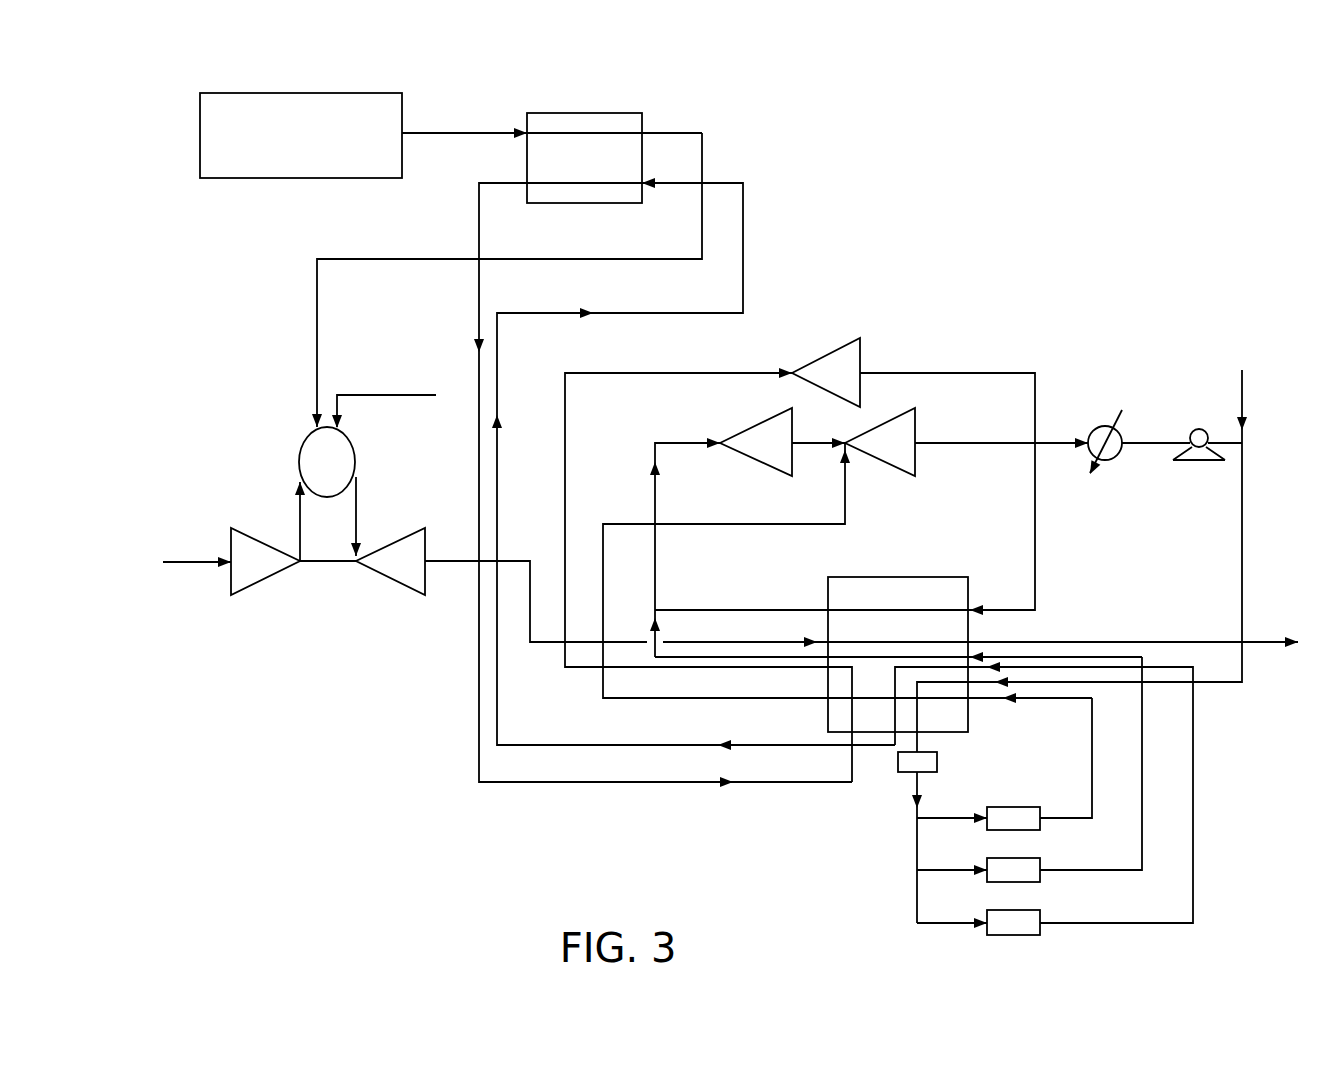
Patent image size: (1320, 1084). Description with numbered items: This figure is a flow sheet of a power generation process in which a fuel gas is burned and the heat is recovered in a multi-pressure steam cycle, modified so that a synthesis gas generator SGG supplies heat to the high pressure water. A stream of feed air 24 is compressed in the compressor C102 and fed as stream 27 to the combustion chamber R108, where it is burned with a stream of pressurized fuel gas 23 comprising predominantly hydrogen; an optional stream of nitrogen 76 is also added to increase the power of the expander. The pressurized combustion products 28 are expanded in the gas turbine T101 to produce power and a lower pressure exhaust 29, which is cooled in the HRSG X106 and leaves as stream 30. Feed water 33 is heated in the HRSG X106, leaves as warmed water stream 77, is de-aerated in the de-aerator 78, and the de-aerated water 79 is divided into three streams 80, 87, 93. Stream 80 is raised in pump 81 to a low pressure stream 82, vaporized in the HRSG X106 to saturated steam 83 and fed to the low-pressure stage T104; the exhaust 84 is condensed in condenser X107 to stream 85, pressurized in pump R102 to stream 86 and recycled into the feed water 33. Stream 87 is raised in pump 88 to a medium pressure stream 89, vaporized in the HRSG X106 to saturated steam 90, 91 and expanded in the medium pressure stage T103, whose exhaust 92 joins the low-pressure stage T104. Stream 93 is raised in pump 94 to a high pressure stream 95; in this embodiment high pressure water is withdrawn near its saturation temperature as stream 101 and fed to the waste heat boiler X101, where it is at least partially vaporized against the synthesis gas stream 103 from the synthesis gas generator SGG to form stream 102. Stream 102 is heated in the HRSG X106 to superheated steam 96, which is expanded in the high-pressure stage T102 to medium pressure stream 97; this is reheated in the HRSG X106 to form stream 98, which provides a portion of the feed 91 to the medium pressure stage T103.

The stream of synthesis gas 103 is at (467, 130).
The stream of pressurized fuel gas 23 is at (316, 286).
The stream of nitrogen 76 is at (414, 394).
The compressed air stream 27 is at (297, 493).
The stream of pressurized gaseous combustion products 28 is at (357, 493).
The stream of feed air 24 is at (184, 560).
The stream of lower pressure gaseous combustion products 29 is at (526, 560).
The product outlet stream 30 is at (1270, 648).
The stream of water 33 is at (1243, 566).
The exhaust stream 84 is at (1010, 446).
The condensed stream 85 is at (1167, 441).
The pressurized condensate stream 86 is at (1220, 441).
The medium pressure stream 97 is at (957, 371).
The reheated medium pressure stream 98 is at (773, 607).
The exhaust stream 92 is at (813, 445).
The stream of medium pressure steam 91 is at (656, 553).
The stream of saturated steam 90 is at (711, 655).
The medium pressure stream 89 is at (1143, 761).
The stream of superheated steam 96 is at (566, 671).
The high pressure water stream 101 is at (630, 744).
The at least partially vaporized water stream 102 is at (598, 783).
The stream of saturated steam 83 is at (722, 699).
The low pressure stream 82 is at (1092, 725).
The warmed water stream 77 is at (919, 748).
The de-aerator 78 is at (898, 759).
The de-aerated water 79 is at (912, 792).
The de-aerated water stream 80 is at (960, 816).
The pump 81 is at (1020, 806).
The de-aerated water stream 87 is at (945, 871).
The pump 88 is at (1042, 857).
The de-aerated water stream 93 is at (945, 924).
The pump 94 is at (1042, 910).
The high pressure stream 95 is at (1194, 828).
The waste heat boiler X101 is at (614, 174).
The HRSG X106 is at (900, 641).
The condenser X107 is at (1102, 430).
The combustion chamber R108 is at (359, 462).
The pump R102 is at (1197, 464).
The compressor C102 is at (293, 572).
The gas turbine T101 is at (390, 572).
The high-pressure stage of the steam turbine T102 is at (823, 362).
The medium pressure stage of the steam turbine T103 is at (748, 451).
The low-pressure stage of the steam turbine T104 is at (910, 444).
The synthesis gas generator SGG is at (301, 135).